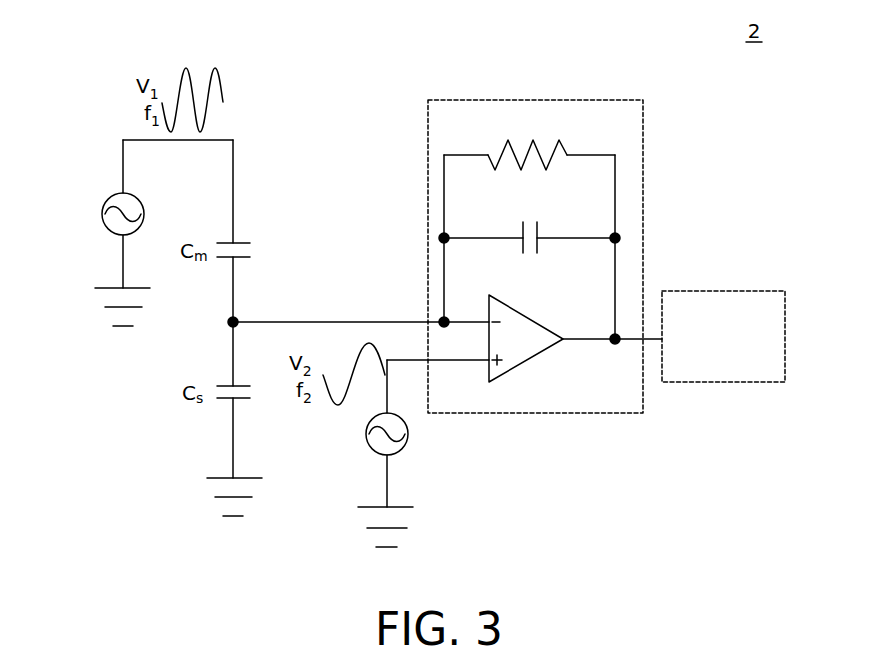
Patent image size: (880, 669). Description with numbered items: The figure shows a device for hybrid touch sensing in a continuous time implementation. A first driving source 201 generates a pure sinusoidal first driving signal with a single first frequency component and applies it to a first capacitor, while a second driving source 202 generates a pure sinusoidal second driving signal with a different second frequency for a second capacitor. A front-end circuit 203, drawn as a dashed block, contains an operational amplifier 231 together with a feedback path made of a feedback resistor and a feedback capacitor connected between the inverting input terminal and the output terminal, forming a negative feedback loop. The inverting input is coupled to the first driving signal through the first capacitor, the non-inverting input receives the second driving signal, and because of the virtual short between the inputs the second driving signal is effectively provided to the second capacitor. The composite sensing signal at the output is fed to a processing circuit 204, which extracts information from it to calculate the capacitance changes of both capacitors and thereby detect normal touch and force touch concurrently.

The first driving source 201 is at (102, 213).
The second driving source 202 is at (367, 436).
The front-end circuit 203 is at (545, 290).
The operational amplifier 231 is at (540, 348).
The processing circuit 204 is at (737, 382).